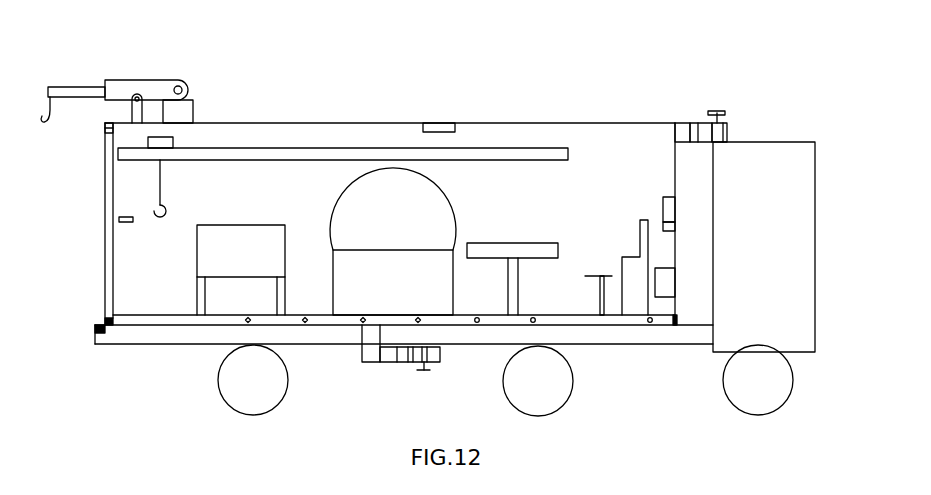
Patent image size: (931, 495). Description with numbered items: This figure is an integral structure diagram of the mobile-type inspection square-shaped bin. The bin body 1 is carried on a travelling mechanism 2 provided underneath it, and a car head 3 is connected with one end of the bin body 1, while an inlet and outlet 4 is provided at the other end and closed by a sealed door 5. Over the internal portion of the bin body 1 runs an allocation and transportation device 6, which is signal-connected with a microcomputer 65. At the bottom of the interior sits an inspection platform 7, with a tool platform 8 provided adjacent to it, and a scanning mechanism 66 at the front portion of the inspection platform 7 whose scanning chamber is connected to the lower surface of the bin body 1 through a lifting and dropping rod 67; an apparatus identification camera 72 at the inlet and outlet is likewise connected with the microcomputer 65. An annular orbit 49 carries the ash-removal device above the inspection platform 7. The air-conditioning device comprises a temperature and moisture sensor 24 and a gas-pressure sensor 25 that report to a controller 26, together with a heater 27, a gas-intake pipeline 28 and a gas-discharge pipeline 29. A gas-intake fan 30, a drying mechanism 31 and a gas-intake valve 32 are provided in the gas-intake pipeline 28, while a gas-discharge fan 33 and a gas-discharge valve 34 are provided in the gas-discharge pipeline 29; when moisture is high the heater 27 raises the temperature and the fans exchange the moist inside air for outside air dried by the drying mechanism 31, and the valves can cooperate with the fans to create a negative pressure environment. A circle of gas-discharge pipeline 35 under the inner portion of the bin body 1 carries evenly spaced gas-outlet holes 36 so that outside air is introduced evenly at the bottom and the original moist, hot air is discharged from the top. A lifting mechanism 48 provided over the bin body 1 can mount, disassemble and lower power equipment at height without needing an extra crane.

The bin body 1 is at (638, 132).
The travelling mechanism 2 is at (320, 335).
The car head 3 is at (765, 245).
The inlet and outlet 4 is at (107, 127).
The sealed door 5 is at (106, 213).
The allocation and transportation device 6 is at (318, 150).
The inspection platform 7 is at (368, 270).
The tool platform 8 is at (497, 253).
The temperature and moisture sensor 24 is at (432, 128).
The gas-pressure sensor 25 is at (668, 226).
The controller 26 is at (673, 202).
The heater 27 is at (668, 286).
The gas-intake pipeline 28 is at (367, 353).
The gas-discharge pipeline 29 is at (682, 131).
The gas-intake fan 30 is at (410, 355).
The drying mechanism 31 is at (392, 353).
The gas-intake valve 32 is at (427, 362).
The gas-discharge fan 33 is at (700, 133).
The gas-discharge valve 34 is at (715, 133).
The gas-discharge pipeline 35 is at (575, 318).
The gas-outlet hole 36 is at (533, 321).
The lifting mechanism 48 is at (147, 93).
The annular orbit 49 is at (454, 228).
The microcomputer 65 is at (643, 250).
The scanning mechanism 66 is at (237, 262).
The lifting and dropping rod 67 is at (204, 298).
The apparatus identification camera 72 is at (127, 222).